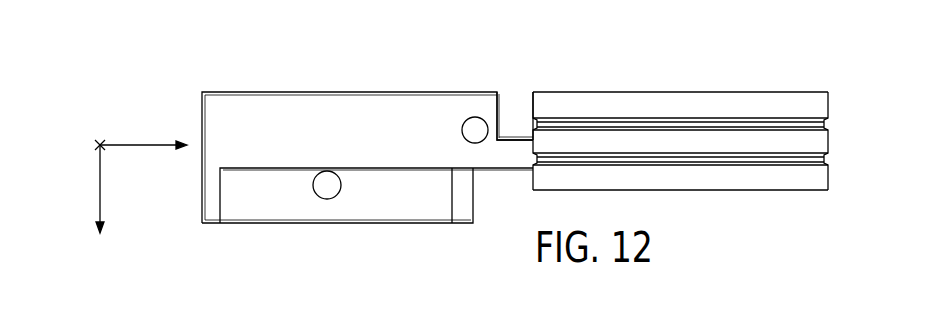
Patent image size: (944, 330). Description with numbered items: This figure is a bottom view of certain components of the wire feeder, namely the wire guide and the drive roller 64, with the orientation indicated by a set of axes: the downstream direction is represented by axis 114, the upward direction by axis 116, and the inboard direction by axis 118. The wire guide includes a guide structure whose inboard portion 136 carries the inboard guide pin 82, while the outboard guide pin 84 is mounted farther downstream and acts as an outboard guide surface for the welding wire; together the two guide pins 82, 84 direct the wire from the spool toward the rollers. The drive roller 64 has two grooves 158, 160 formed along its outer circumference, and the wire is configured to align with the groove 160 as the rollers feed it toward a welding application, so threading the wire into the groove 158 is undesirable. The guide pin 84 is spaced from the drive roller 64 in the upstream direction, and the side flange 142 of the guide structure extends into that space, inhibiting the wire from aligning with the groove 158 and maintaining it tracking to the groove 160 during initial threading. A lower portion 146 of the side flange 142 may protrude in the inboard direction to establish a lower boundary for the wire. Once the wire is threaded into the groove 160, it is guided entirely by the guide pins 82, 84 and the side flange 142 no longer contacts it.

The inboard portion 136 is at (260, 100).
The lower portion 146 is at (513, 102).
The side flange 142 is at (520, 90).
The drive roller 64 is at (675, 105).
The groove 158 is at (785, 122).
The groove 160 is at (783, 158).
The guide pin 84 is at (470, 128).
The guide pin 82 is at (318, 187).
The axis 116 is at (103, 140).
The axis 114 is at (137, 150).
The axis 118 is at (100, 188).